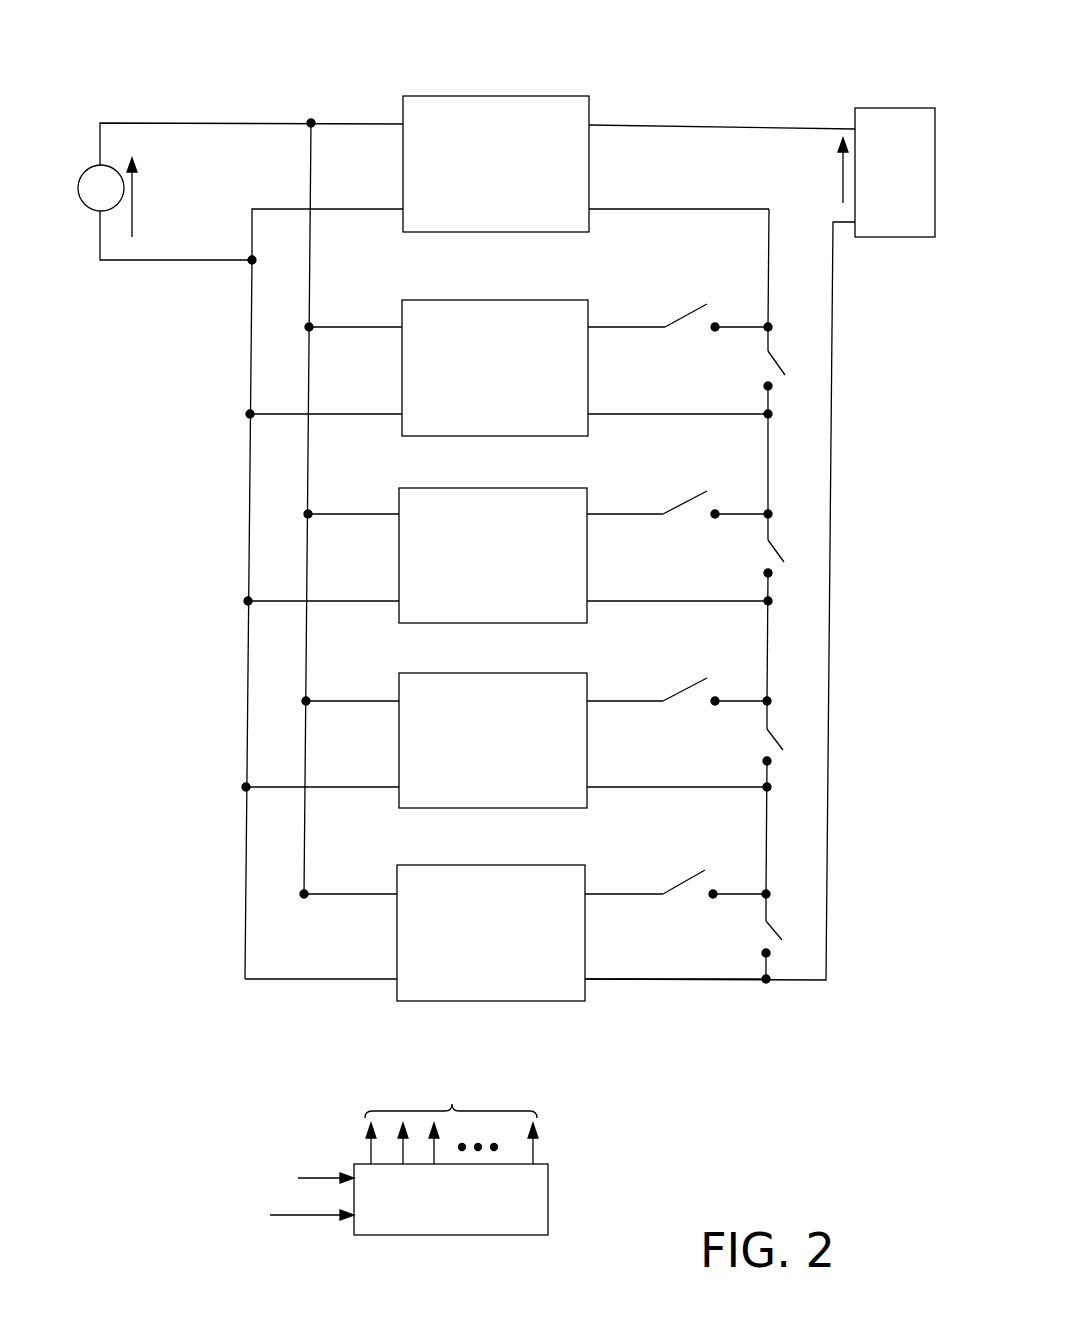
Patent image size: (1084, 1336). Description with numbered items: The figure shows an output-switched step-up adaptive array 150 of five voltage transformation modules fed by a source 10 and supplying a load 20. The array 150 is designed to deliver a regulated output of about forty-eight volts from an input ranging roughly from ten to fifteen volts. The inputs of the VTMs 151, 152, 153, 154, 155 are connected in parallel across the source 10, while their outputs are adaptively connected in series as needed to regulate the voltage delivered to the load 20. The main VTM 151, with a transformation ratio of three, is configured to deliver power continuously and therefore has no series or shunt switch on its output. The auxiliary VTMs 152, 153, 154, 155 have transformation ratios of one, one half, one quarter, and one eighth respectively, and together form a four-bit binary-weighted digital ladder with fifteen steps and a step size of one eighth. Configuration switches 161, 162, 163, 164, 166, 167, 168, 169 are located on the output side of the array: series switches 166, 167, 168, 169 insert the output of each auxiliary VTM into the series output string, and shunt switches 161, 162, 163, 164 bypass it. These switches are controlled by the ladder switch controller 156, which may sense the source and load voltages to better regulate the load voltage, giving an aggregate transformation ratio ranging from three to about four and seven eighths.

The step-up adaptive array 150 is at (619, 25).
The voltage source 10 is at (104, 166).
The load 20 is at (887, 108).
The main VTM 151 is at (586, 164).
The auxiliary VTM 152 is at (509, 368).
The auxiliary VTM 153 is at (508, 555).
The auxiliary VTM 154 is at (506, 740).
The auxiliary VTM 155 is at (507, 933).
The ladder switch controller 156 is at (549, 1205).
The configuration switch 161 is at (795, 358).
The configuration switch 162 is at (794, 545).
The configuration switch 163 is at (793, 733).
The configuration switch 164 is at (792, 925).
The configuration switch 166 is at (680, 309).
The configuration switch 167 is at (679, 494).
The configuration switch 168 is at (679, 684).
The configuration switch 169 is at (677, 876).